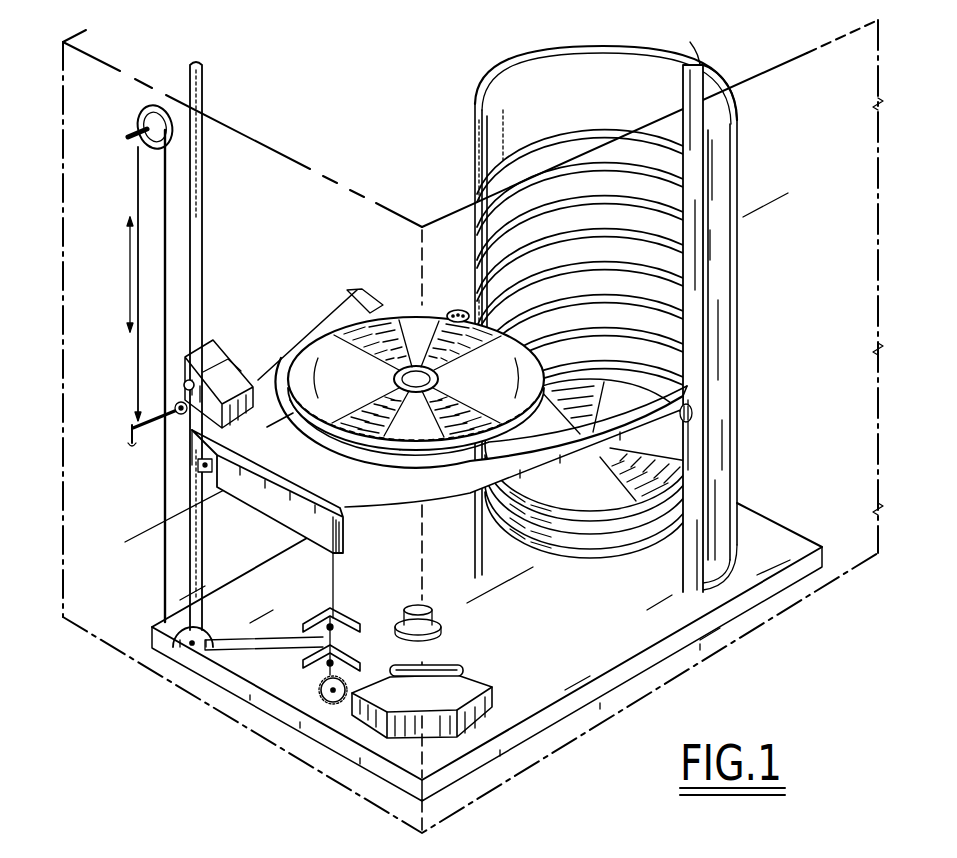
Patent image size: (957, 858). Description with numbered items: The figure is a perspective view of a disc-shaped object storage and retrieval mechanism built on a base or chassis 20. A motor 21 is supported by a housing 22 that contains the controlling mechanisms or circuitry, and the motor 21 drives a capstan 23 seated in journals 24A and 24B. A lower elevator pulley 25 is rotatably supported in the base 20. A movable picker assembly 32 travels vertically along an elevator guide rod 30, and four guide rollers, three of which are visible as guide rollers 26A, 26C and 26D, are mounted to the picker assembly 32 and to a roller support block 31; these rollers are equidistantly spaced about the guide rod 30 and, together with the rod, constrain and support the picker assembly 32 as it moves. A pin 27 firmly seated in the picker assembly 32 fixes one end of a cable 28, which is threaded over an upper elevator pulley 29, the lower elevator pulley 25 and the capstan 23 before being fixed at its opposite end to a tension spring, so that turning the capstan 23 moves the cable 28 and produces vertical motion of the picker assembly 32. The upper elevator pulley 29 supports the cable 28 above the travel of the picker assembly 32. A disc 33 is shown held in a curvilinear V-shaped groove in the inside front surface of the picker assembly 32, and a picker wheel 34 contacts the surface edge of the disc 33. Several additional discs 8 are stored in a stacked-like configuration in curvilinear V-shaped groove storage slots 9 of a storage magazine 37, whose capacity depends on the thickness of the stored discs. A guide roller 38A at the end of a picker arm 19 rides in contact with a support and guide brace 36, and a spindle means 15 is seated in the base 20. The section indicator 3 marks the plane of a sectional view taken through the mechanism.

The section line 3- 3 is at (772, 190).
The discs 8 is at (607, 504).
The curvilinear V-shaped groove storage slots 9 is at (520, 182).
The spindle means 15 is at (425, 606).
The picker arm 19 is at (645, 447).
The base or chassis 20 is at (648, 655).
The motor 21 is at (456, 667).
The housing 22 is at (492, 697).
The capstan 23 is at (319, 690).
The journal 24A is at (352, 613).
The journal 24B is at (362, 657).
The lower elevator pulley 25 is at (172, 646).
The guide roller 26A is at (200, 472).
The guide roller 26C is at (180, 418).
The guide roller 26D is at (186, 386).
The pin 27 is at (128, 433).
The cable 28 is at (138, 192).
The upper elevator pulley 29 is at (148, 118).
The elevator guide rod 30 is at (204, 212).
The roller support block 31 is at (225, 348).
The movable picker assembly 32 is at (305, 497).
The disc 33 is at (410, 336).
The picker wheel 34 is at (458, 310).
The support and guide brace 36 is at (697, 282).
The storage magazine 37 is at (732, 157).
The guide roller 38A is at (697, 408).